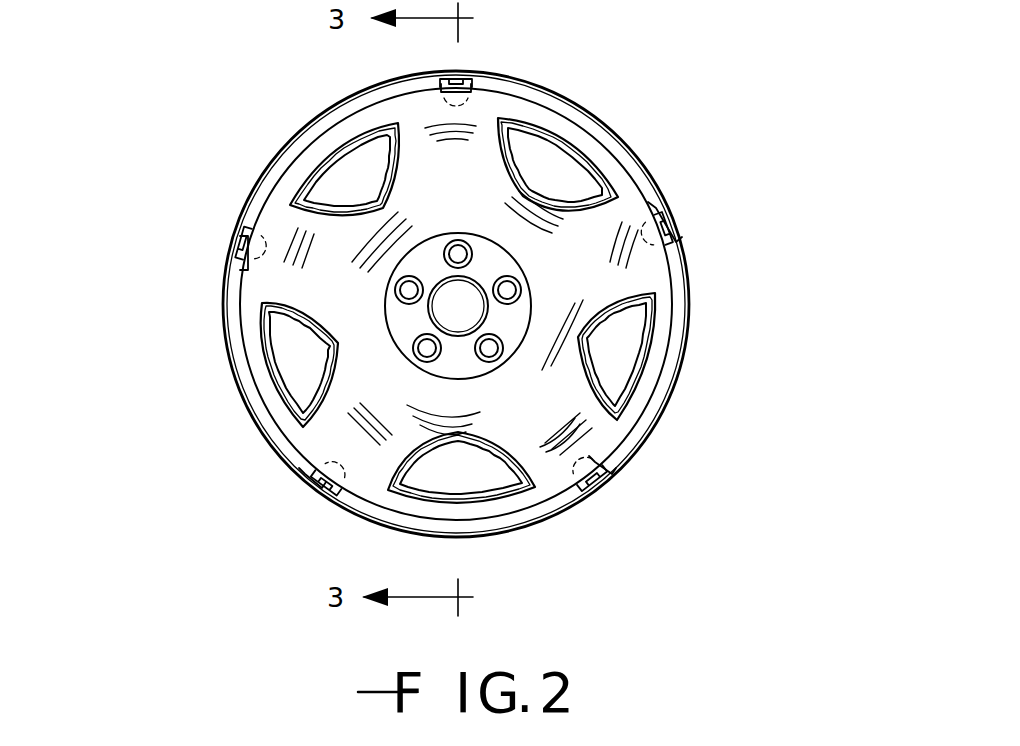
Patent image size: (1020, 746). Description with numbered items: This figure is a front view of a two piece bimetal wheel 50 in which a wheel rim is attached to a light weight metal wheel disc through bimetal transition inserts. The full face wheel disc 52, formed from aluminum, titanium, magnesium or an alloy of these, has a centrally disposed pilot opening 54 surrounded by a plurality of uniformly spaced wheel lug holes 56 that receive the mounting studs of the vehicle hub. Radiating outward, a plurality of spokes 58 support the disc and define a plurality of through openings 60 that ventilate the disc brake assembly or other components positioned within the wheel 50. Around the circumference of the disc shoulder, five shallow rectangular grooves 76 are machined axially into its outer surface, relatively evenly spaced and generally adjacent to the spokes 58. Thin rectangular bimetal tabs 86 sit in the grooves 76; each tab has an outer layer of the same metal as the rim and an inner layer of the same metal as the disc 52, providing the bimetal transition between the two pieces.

The two piece bimetal wheel 50 is at (158, 216).
The full face wheel disc 52 is at (214, 329).
The pilot opening 54 is at (472, 326).
The wheel lug holes 56 is at (521, 284).
The spokes 58 is at (565, 441).
The through openings 60 is at (578, 388).
The grooves 76 is at (520, 84).
The bimetal tabs 86 is at (465, 66).